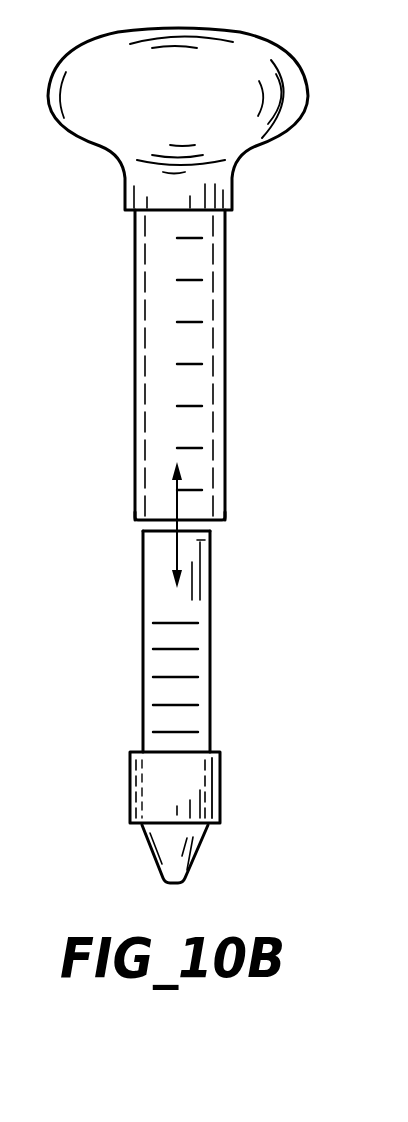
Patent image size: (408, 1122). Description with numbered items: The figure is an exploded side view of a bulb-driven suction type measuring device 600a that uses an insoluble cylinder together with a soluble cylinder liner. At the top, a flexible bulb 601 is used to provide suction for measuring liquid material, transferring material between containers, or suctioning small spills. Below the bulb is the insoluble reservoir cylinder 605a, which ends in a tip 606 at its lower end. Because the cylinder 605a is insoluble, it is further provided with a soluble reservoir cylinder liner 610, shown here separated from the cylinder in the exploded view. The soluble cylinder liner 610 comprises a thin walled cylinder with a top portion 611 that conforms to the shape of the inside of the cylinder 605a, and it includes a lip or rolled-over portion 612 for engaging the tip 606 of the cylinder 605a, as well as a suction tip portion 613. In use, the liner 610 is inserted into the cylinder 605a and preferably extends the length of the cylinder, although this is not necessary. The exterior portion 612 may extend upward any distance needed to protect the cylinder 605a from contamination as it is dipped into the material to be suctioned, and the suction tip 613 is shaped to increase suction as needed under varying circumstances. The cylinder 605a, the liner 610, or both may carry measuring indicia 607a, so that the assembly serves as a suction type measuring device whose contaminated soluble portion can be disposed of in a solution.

The suction device 600a is at (300, 252).
The flexible bulb 601 is at (132, 115).
The insoluble reservoir cylinder 605a is at (135, 400).
The tip of the cylinder 606 is at (142, 522).
The measuring indicia 607a is at (195, 446).
The soluble reservoir cylinder liner 610 is at (143, 660).
The top portion 611 is at (208, 542).
The lip or rolled-over portion 612 is at (148, 803).
The suction tip portion 613 is at (178, 850).